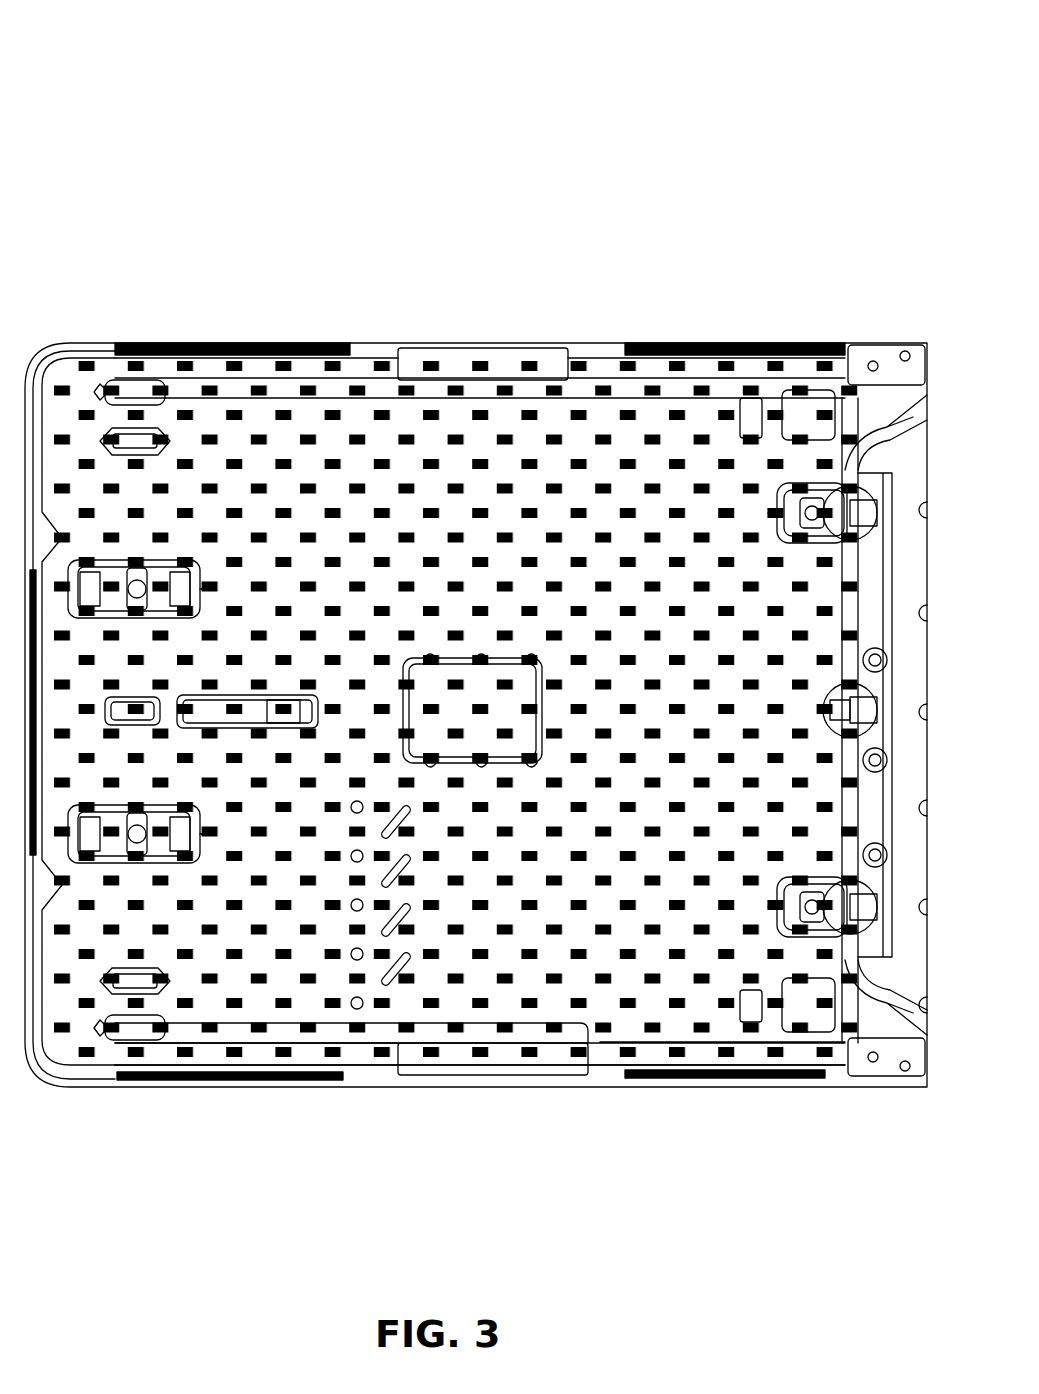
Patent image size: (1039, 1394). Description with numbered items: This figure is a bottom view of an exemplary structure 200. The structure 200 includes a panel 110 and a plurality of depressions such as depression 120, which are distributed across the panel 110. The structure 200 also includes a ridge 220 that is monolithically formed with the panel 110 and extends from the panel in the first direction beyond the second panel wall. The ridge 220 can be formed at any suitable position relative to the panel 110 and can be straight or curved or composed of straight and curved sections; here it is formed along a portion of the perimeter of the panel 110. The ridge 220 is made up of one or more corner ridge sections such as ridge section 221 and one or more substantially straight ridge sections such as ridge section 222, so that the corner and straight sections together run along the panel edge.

The structure 200 is at (185, 75).
The panel 110 is at (505, 430).
The depression 120 is at (700, 940).
The ridge 220 is at (362, 1087).
The corner ridge section 221 is at (44, 340).
The substantially straight ridge section 222 is at (137, 1087).